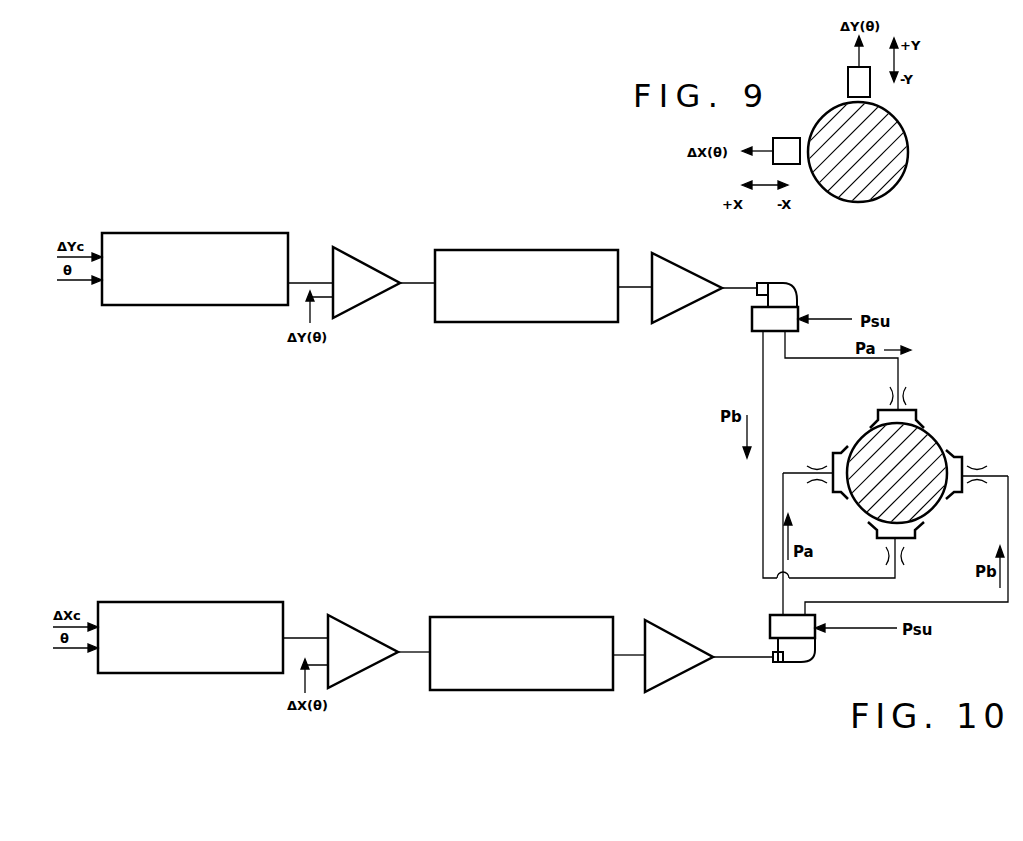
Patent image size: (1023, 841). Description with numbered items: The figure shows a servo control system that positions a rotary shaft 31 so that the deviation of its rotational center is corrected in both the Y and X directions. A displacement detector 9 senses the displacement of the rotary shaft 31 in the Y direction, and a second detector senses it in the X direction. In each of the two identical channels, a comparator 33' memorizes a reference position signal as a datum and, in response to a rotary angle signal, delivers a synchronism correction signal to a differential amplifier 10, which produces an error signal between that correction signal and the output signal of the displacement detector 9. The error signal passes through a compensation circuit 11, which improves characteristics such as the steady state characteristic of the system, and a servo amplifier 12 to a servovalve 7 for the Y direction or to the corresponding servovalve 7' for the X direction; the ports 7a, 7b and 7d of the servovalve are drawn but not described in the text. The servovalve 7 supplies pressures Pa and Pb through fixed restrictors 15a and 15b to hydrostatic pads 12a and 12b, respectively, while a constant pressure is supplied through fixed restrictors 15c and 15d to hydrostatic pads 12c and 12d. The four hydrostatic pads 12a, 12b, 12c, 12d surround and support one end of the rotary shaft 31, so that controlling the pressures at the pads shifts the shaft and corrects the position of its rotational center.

In FIG. 9, the displacement detector 9 is at (848, 84).
In FIG. 9, the rotary shaft 31 is at (896, 180).
In FIG. 10, the rotary shaft 31 is at (926, 511).
In FIG. 10, the comparator 33' is at (193, 442).
In FIG. 10, the differential amplifier 10 is at (364, 467).
In FIG. 10, the compensation circuit 11 is at (533, 250).
In FIG. 10, the servo amplifier 12 is at (683, 472).
In FIG. 10, the servovalve 7 is at (764, 307).
In FIG. 10, the servovalve 7' is at (806, 638).
In FIG. 10, the valve output port a 7a is at (788, 345).
In FIG. 10, the valve output port b 7b is at (762, 372).
In FIG. 10, the valve supply port 7d is at (834, 318).
In FIG. 10, the hydrostatic pad 12a is at (881, 410).
In FIG. 10, the hydrostatic pad 12b is at (878, 537).
In FIG. 10, the hydrostatic pad 12c is at (836, 450).
In FIG. 10, the hydrostatic pad 12d is at (968, 452).
In FIG. 10, the fixed restrictor 15a is at (906, 399).
In FIG. 10, the fixed restrictor 15b is at (905, 560).
In FIG. 10, the fixed restrictor 15c is at (821, 486).
In FIG. 10, the fixed restrictor 15d is at (979, 488).